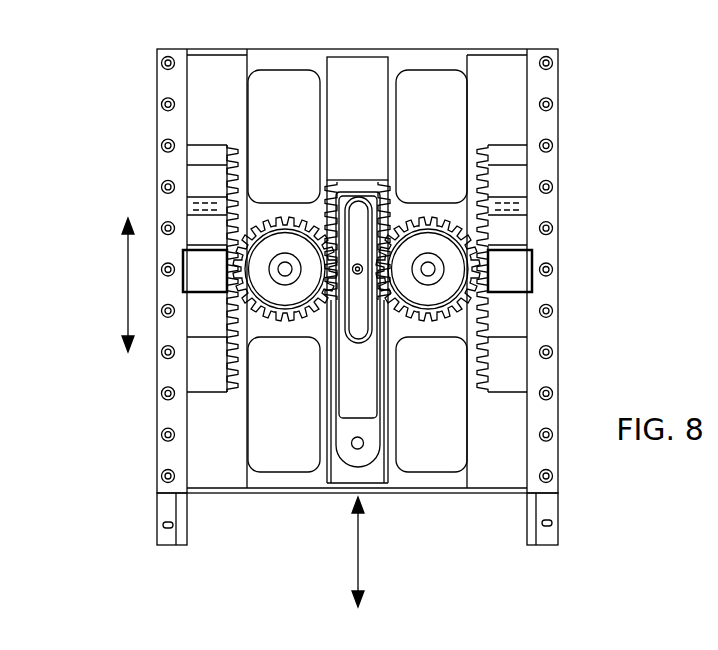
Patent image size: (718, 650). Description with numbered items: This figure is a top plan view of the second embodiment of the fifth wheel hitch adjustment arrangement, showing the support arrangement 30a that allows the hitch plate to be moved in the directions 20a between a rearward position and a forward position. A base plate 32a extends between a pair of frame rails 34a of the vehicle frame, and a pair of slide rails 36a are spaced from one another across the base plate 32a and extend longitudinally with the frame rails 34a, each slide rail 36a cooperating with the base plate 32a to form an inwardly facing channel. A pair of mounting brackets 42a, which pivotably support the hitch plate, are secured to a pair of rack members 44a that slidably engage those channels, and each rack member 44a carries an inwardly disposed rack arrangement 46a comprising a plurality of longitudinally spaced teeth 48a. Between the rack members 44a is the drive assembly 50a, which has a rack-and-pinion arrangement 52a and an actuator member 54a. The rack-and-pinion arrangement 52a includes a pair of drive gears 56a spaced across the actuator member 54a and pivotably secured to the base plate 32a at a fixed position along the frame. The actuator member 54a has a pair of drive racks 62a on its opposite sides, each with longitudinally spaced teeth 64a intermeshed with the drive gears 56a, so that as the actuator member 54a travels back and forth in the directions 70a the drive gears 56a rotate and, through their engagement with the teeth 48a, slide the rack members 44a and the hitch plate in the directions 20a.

The directions 20a is at (128, 282).
The support arrangement 30a is at (534, 300).
The base plate 32a is at (440, 58).
The frame rails 34a is at (558, 530).
The slide rails 36a is at (548, 84).
The mounting brackets 42a is at (515, 268).
The rack members 44a is at (517, 378).
The rack arrangement 46a is at (239, 150).
The teeth 48a is at (226, 166).
The drive assembly 50a is at (304, 352).
The rack-and-pinion arrangement 52a is at (423, 351).
The actuator member 54a is at (340, 452).
The drive gears 56a is at (288, 203).
The drive racks 62a is at (394, 185).
The teeth 64a is at (328, 182).
The directions 70a is at (358, 548).